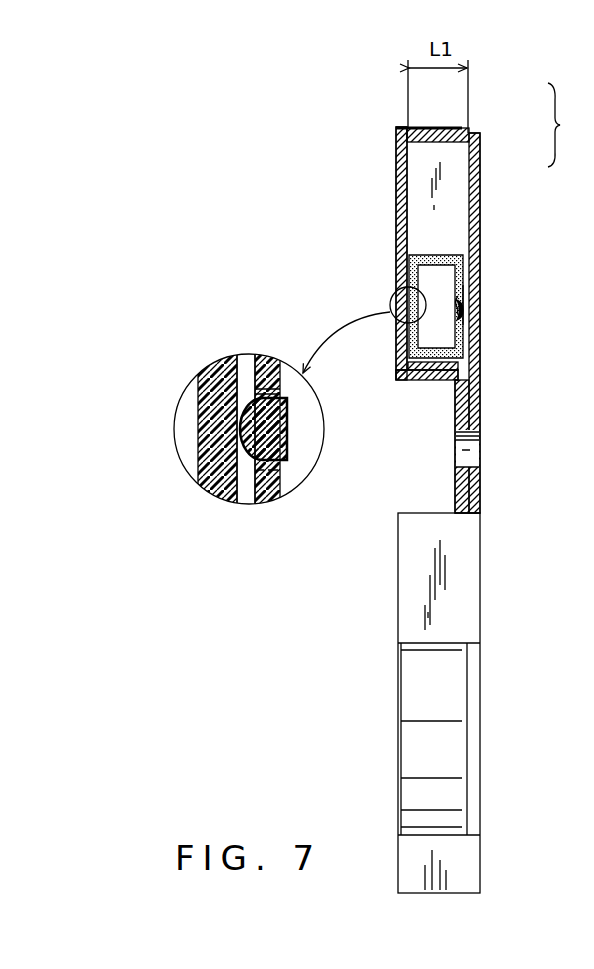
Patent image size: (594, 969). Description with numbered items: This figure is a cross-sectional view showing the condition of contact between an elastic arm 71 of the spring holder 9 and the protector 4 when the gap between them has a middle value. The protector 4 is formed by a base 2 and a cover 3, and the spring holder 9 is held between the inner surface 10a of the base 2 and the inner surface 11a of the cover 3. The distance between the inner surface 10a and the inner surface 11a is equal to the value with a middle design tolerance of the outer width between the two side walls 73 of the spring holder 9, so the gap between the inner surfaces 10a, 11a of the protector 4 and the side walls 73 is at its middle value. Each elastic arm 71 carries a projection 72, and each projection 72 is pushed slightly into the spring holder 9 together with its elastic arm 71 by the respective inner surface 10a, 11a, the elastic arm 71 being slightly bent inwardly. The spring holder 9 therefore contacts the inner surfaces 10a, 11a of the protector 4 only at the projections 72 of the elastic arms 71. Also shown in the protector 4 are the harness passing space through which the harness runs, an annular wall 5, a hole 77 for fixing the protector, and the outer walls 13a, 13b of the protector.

The base 2 is at (488, 162).
The cover 3 is at (445, 125).
The protector 4 is at (564, 125).
The annular wall 5 is at (430, 382).
The spring holder 9 is at (448, 252).
The inner surface of the base 10a is at (464, 191).
The inner surface of the cover 11a is at (401, 180).
The outer wall of the protector 13a is at (465, 588).
The outer wall of the protector 13b is at (433, 127).
The elastic arm 71 is at (458, 335).
The projection 72 is at (400, 303).
The side wall 73 is at (400, 280).
The hole for fixing 77 is at (480, 448).